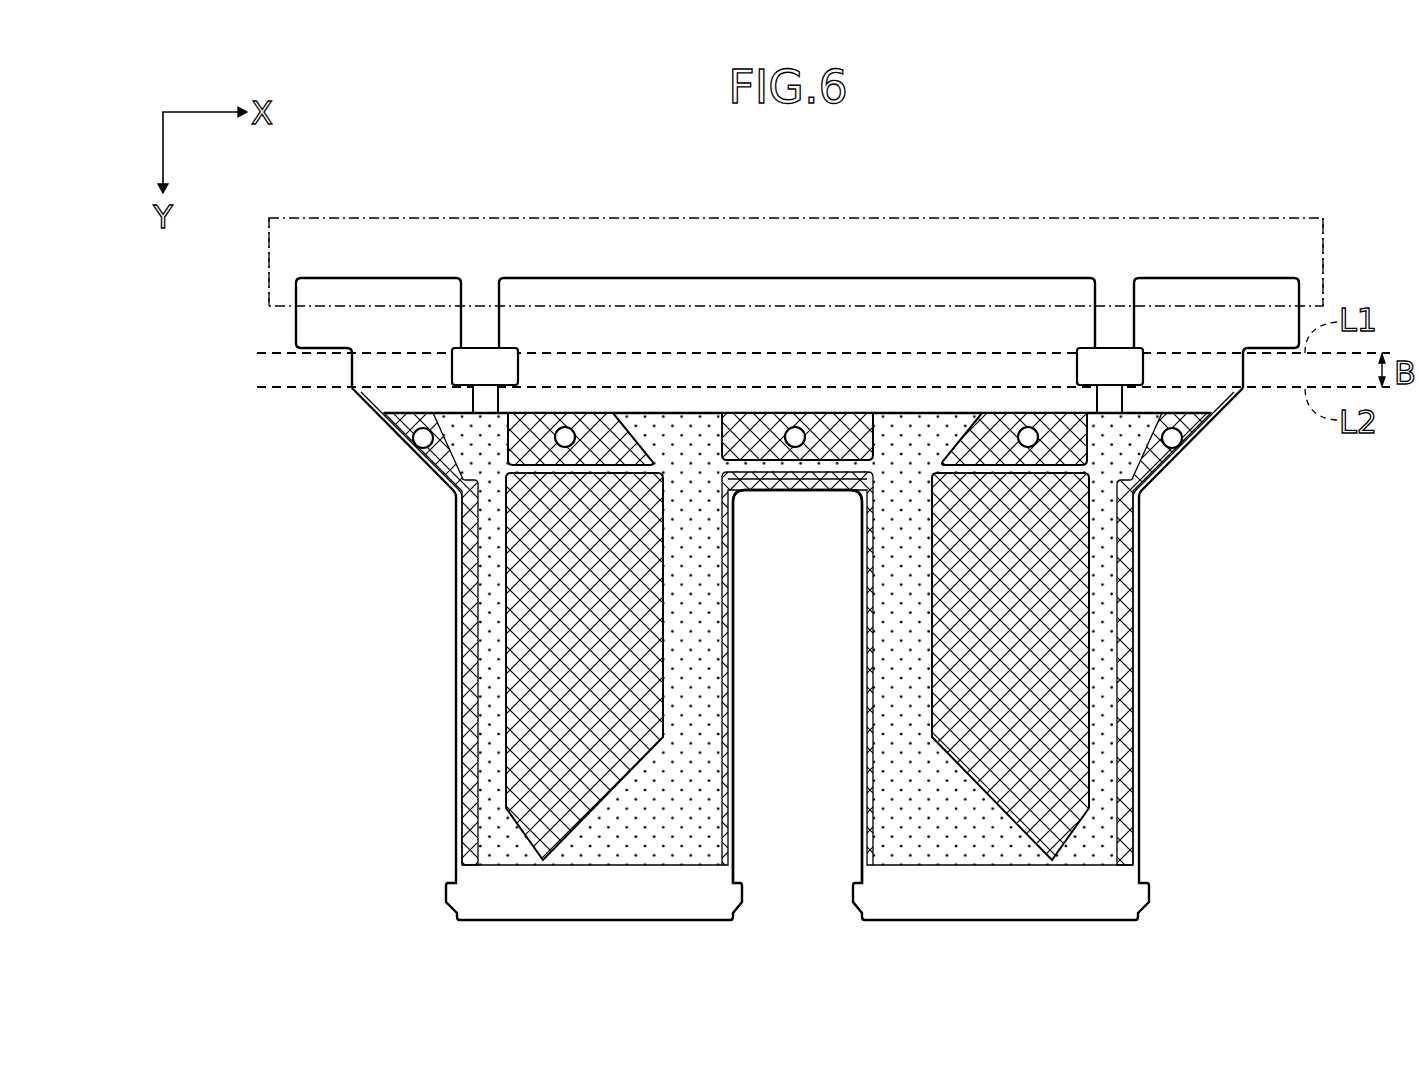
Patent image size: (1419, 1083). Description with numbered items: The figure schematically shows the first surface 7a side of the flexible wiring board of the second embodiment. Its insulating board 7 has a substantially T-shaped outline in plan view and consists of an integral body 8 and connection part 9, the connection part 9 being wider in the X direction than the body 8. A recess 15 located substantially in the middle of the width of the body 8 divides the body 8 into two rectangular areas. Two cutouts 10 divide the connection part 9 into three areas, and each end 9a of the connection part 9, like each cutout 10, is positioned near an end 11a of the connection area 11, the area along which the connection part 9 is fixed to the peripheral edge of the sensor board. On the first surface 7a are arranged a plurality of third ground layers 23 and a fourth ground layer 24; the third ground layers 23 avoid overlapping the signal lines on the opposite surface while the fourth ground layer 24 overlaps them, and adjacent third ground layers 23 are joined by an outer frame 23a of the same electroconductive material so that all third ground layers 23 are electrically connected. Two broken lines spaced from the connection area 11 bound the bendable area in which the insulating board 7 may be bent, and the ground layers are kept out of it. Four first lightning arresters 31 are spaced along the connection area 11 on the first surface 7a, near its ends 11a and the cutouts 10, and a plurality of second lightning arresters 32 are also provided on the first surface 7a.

The insulating board 7 is at (731, 560).
The first surface 7a is at (845, 292).
The body 8 is at (735, 560).
The connection part 9 is at (737, 315).
The end 9a is at (737, 268).
The cutout 10 is at (462, 293).
The connection area 11 is at (646, 218).
The end 11a is at (268, 262).
The recess 15 is at (860, 795).
The third ground layer 23 is at (583, 413).
The outer frame 23a is at (437, 413).
The fourth ground layer 24 is at (638, 843).
The first lightning arrester 31 is at (473, 403).
The second lightning arrester 32 is at (418, 462).